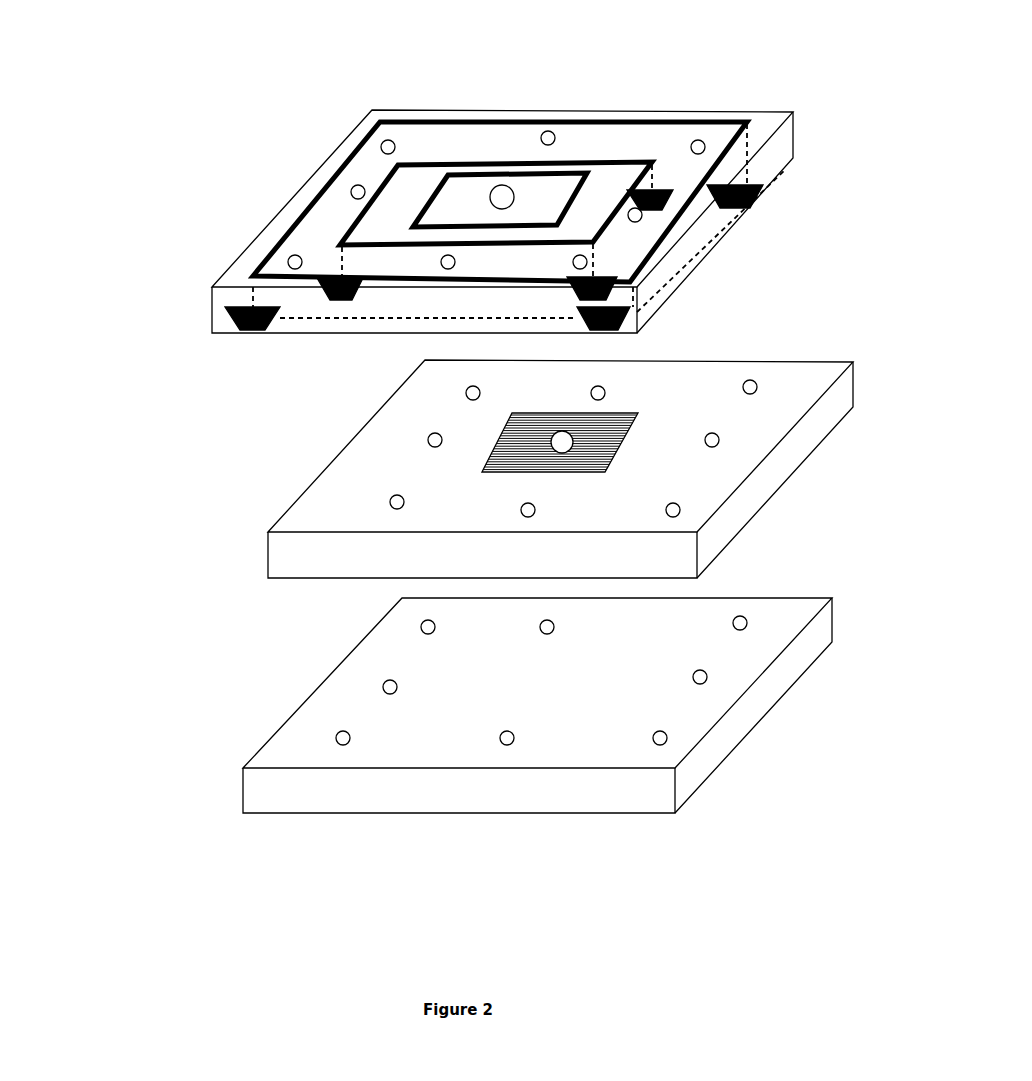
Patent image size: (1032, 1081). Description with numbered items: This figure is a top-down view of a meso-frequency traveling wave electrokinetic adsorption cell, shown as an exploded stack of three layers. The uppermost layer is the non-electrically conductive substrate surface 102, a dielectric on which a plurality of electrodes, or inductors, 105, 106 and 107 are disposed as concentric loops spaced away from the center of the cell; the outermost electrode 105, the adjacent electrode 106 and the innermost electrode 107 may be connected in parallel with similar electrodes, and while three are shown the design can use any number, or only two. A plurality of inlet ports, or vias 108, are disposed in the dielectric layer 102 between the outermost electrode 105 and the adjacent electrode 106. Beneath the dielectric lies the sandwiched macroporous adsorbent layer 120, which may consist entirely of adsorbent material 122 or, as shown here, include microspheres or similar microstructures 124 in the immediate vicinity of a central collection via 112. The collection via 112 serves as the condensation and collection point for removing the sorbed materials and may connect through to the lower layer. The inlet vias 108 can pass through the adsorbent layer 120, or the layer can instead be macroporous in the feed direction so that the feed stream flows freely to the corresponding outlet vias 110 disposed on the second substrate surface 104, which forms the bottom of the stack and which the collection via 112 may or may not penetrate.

The non-electrically conductive substrate surface 102 is at (788, 145).
The second substrate surface 104 is at (703, 758).
The electrode 105 is at (630, 253).
The electrode 106 is at (380, 250).
The electrode 107 is at (430, 198).
The inlet vias 108 is at (388, 135).
The outlet vias 110 is at (343, 745).
The collection via 112 is at (502, 190).
The adsorbent layer 120 is at (767, 490).
The adsorbent material 122 is at (743, 437).
The microstructures 124 is at (603, 440).